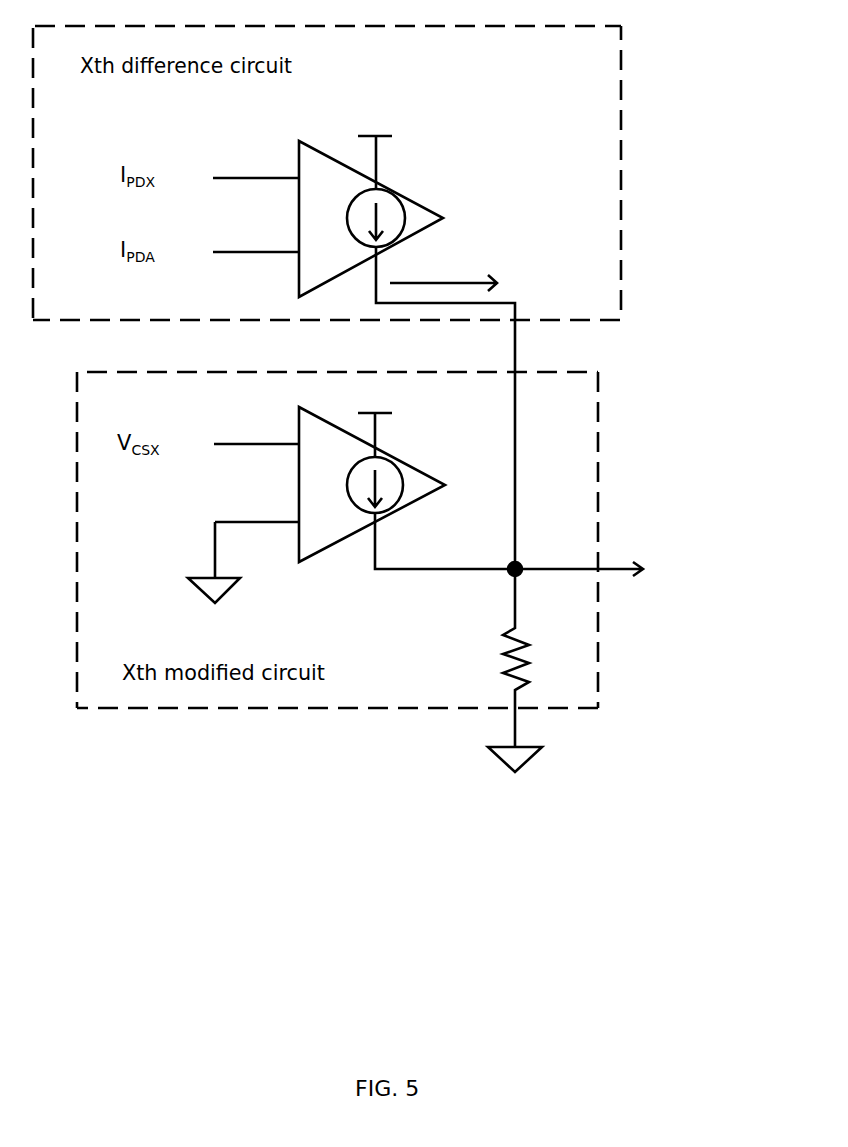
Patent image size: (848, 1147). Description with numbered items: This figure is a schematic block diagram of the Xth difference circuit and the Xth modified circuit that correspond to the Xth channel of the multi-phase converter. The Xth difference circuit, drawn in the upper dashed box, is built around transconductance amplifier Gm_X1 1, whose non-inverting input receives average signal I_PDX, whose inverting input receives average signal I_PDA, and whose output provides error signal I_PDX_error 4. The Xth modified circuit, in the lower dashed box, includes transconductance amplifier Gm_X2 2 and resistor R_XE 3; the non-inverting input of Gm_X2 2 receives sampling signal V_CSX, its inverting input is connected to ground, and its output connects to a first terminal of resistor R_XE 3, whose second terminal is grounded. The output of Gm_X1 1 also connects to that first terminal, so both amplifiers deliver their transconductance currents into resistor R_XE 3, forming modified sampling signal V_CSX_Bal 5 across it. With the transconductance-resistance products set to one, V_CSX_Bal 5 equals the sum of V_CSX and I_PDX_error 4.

The transconductance amplifier Gm_X1 of the Xth difference circuit 1 is at (383, 192).
The transconductance amplifier Gm_X2 of the Xth modified circuit 2 is at (378, 471).
The resistor R_XE 3 is at (497, 670).
The error current I_PDX_error output 4 is at (449, 269).
The balanced voltage output V_CSX_Bal 5 is at (629, 576).